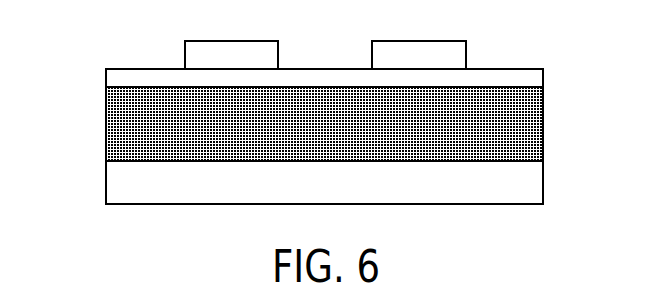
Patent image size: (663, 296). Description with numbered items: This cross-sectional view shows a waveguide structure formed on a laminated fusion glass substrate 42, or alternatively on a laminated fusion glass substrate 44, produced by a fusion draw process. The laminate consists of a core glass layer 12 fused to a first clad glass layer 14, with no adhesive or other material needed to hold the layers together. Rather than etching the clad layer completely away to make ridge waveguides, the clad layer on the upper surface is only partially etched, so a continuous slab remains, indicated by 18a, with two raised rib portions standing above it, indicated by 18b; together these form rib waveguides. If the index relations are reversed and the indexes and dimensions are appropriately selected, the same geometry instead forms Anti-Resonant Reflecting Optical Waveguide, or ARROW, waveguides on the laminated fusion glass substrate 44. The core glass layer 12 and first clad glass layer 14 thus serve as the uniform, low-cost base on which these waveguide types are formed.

The core glass layer 12 is at (122, 134).
The first clad glass layer 14 is at (122, 174).
The rib waveguide 18a is at (120, 81).
The rib waveguide 18b is at (227, 50).
The laminated (fusion) glass substrate 42 is at (285, 136).
The laminated (fusion) glass substrate 44 is at (133, 236).